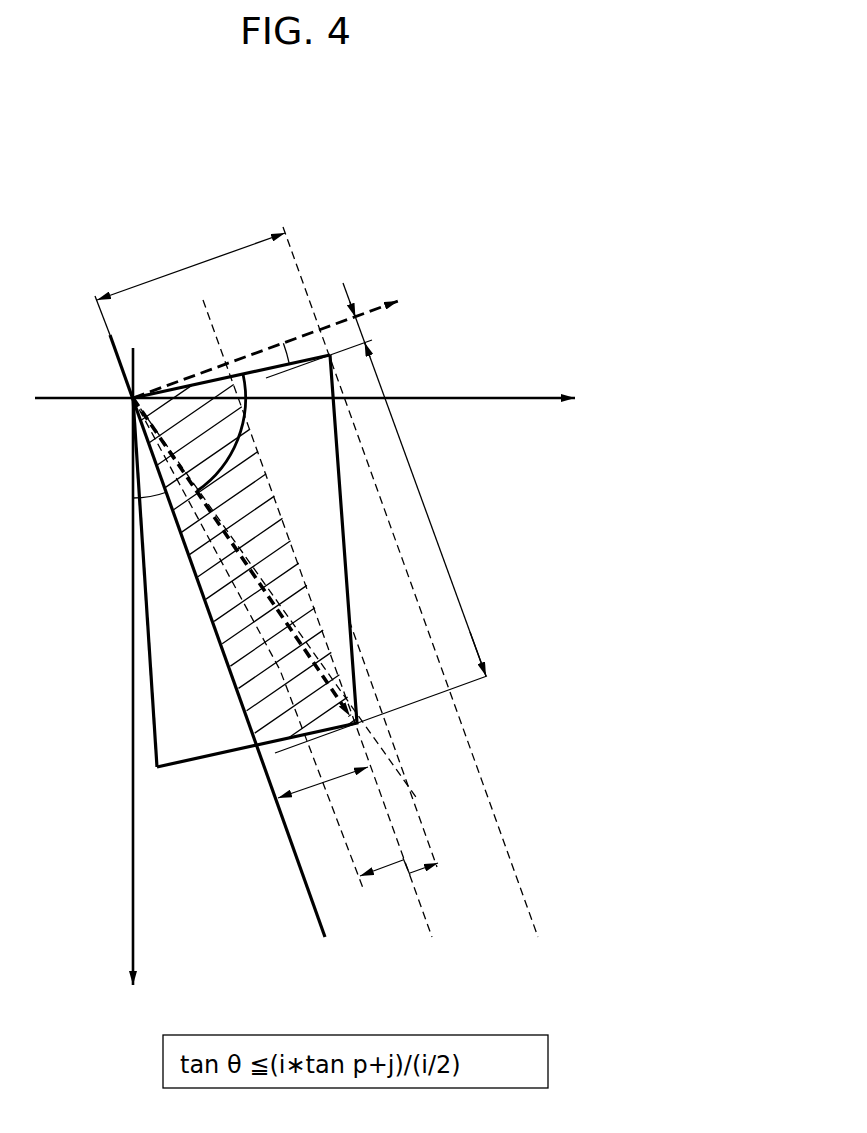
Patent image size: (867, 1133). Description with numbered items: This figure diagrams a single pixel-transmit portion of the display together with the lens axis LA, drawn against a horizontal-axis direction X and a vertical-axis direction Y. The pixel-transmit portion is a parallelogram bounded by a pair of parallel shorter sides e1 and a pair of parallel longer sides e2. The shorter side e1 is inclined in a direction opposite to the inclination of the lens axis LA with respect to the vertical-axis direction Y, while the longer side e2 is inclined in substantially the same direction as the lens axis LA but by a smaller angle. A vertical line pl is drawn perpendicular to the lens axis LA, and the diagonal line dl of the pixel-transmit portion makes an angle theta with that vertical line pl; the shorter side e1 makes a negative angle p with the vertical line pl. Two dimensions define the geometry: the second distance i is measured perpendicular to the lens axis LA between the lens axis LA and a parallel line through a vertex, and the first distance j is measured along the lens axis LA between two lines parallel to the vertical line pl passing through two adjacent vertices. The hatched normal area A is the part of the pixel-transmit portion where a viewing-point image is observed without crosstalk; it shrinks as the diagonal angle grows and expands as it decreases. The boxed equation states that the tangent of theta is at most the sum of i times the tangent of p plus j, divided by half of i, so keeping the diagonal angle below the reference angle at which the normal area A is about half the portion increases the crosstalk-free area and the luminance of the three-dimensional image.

The lens axis LA is at (108, 337).
The shorter side e1 is at (270, 367).
The longer side e2 is at (142, 573).
The diagonal line dl is at (265, 588).
The vertical line pl is at (400, 300).
The second distance i is at (191, 266).
The first distance j is at (376, 518).
The angle between vertical line and shorter side p is at (293, 352).
The normal area A is at (323, 782).
The horizontal-axis direction X is at (314, 402).
The vertical-axis direction Y is at (129, 682).